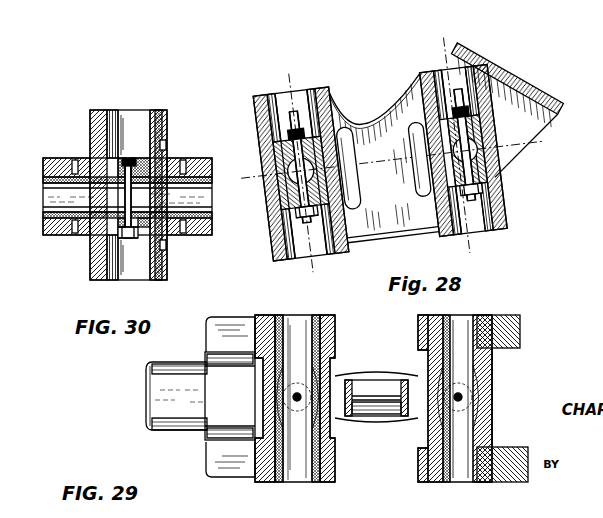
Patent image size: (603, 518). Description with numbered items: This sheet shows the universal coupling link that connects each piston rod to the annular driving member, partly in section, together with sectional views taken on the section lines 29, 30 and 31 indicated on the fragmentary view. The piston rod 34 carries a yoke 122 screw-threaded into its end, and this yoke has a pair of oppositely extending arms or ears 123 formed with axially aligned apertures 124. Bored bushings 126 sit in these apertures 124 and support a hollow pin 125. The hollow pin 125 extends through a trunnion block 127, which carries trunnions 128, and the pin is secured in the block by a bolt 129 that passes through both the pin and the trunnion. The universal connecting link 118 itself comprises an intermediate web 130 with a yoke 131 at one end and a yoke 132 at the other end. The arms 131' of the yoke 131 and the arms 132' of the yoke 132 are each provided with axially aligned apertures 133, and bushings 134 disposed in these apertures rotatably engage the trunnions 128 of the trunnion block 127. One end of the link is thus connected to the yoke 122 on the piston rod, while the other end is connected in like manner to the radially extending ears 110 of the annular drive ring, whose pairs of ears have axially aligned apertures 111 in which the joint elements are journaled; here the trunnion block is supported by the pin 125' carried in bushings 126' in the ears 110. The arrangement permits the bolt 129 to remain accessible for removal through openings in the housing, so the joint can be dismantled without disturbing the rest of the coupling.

In FIG. 29, the shaft 34 is at (176, 420).
In FIG. 29, the radially extending ears 110 is at (525, 331).
In FIG. 29, the axially aligned apertures 111 is at (490, 318).
In FIG. 29, the universal connecting link 118 is at (375, 418).
In FIG. 30, the yoke 122 is at (50, 236).
In FIG. 29, the yoke 122 is at (212, 445).
In FIG. 30, the arms or ears 123 is at (55, 160).
In FIG. 28, the arms or ears 123 is at (268, 140).
In FIG. 29, the arms or ears 123 is at (262, 318).
In FIG. 30, the axially aligned apertures 124 is at (66, 236).
In FIG. 29, the axially aligned apertures 124 is at (333, 320).
In FIG. 30, the hollow pin 125 is at (111, 196).
In FIG. 28, the hollow pin 125 is at (367, 189).
In FIG. 29, the hollow pin 125 is at (297, 415).
In FIG. 28, the pin 125' is at (406, 128).
In FIG. 29, the pin 125' is at (455, 409).
In FIG. 30, the bored bushings 126 is at (125, 204).
In FIG. 29, the bored bushings 126 is at (381, 411).
In FIG. 29, the bushings 126' is at (538, 308).
In FIG. 30, the trunnion block 127 is at (100, 150).
In FIG. 29, the trunnion block 127 is at (268, 378).
In FIG. 30, the trunnions 128 is at (110, 112).
In FIG. 28, the trunnions 128 is at (292, 95).
In FIG. 29, the trunnions 128 is at (262, 460).
In FIG. 30, the bolt 129 is at (132, 190).
In FIG. 29, the bolt 129 is at (330, 382).
In FIG. 28, the intermediate web 130 is at (395, 240).
In FIG. 29, the intermediate web 130 is at (381, 376).
In FIG. 29, the yoke 131 is at (350, 432).
In FIG. 30, the arms 131' is at (99, 193).
In FIG. 29, the arms 131' is at (263, 397).
In FIG. 29, the yoke 132 is at (408, 432).
In FIG. 28, the arms 132' is at (472, 140).
In FIG. 29, the arms 132' is at (521, 397).
In FIG. 30, the axially aligned apertures 133 is at (165, 125).
In FIG. 28, the axially aligned apertures 133 is at (500, 80).
In FIG. 30, the bushings 134 is at (158, 112).
In FIG. 28, the section line 29— 29 is at (232, 186).
In FIG. 28, the section line 30— 30 is at (290, 59).
In FIG. 28, the section line 31— 31 is at (436, 45).